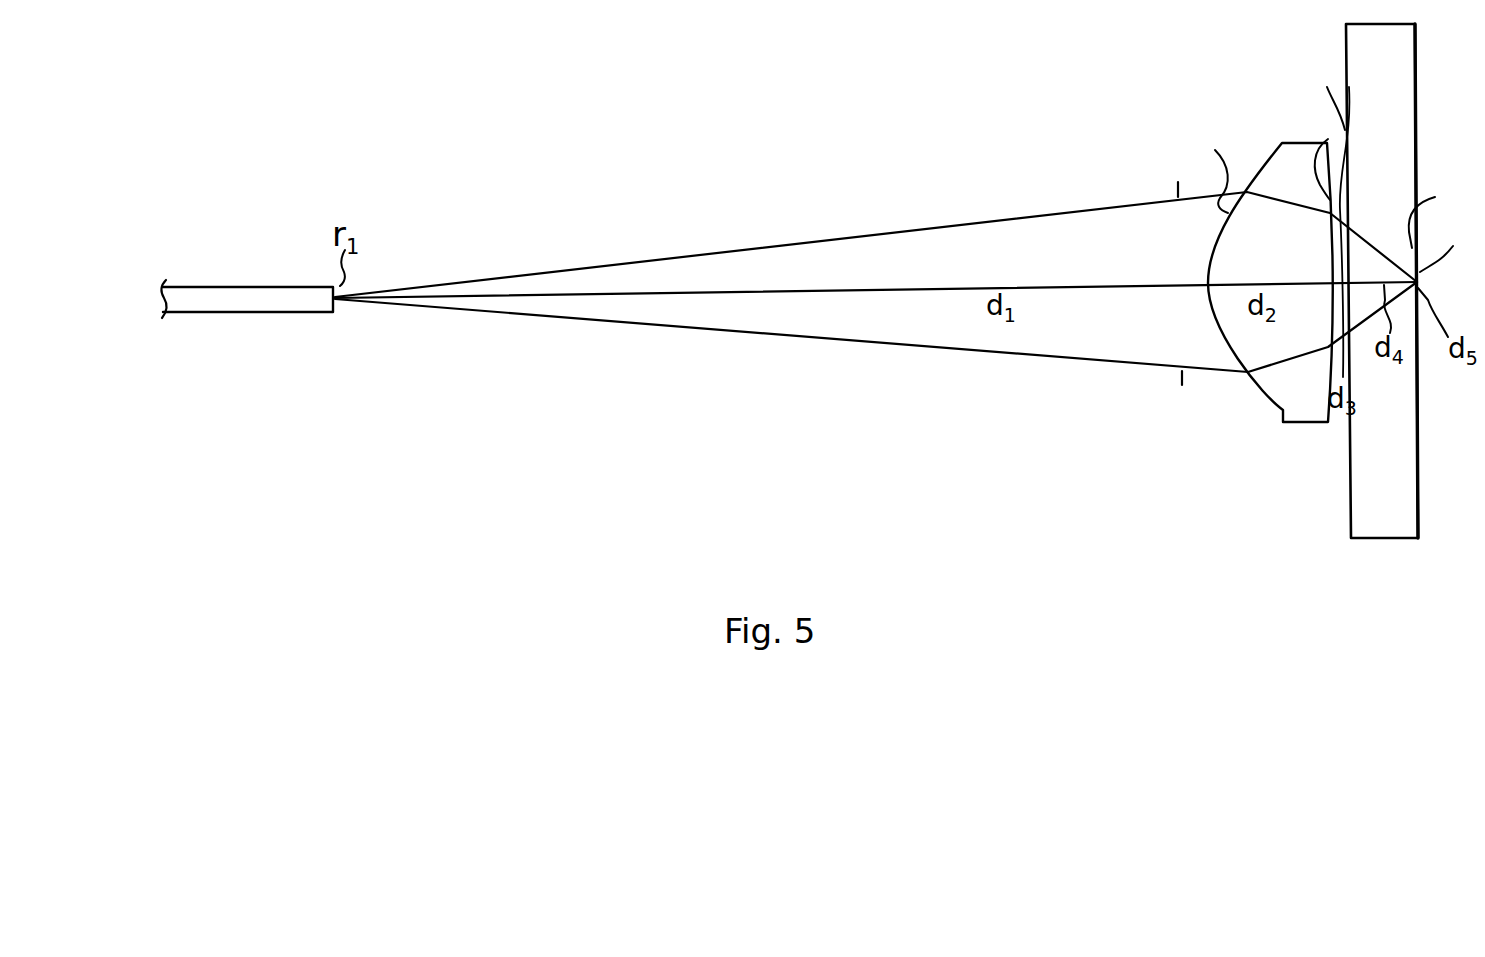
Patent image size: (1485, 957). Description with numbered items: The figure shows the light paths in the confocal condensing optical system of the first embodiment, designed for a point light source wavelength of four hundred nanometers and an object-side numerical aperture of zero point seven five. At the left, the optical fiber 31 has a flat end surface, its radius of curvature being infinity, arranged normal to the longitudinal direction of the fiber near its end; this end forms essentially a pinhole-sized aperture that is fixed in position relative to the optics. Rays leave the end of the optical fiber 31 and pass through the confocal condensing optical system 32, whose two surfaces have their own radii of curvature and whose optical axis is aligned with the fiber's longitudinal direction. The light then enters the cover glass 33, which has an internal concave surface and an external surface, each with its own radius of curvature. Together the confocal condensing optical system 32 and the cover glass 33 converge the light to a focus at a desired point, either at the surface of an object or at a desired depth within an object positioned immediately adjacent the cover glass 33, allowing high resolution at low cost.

The optical fiber 31 is at (244, 310).
The confocal condensing optical system 32 is at (1286, 399).
The cover glass 33 is at (1390, 530).